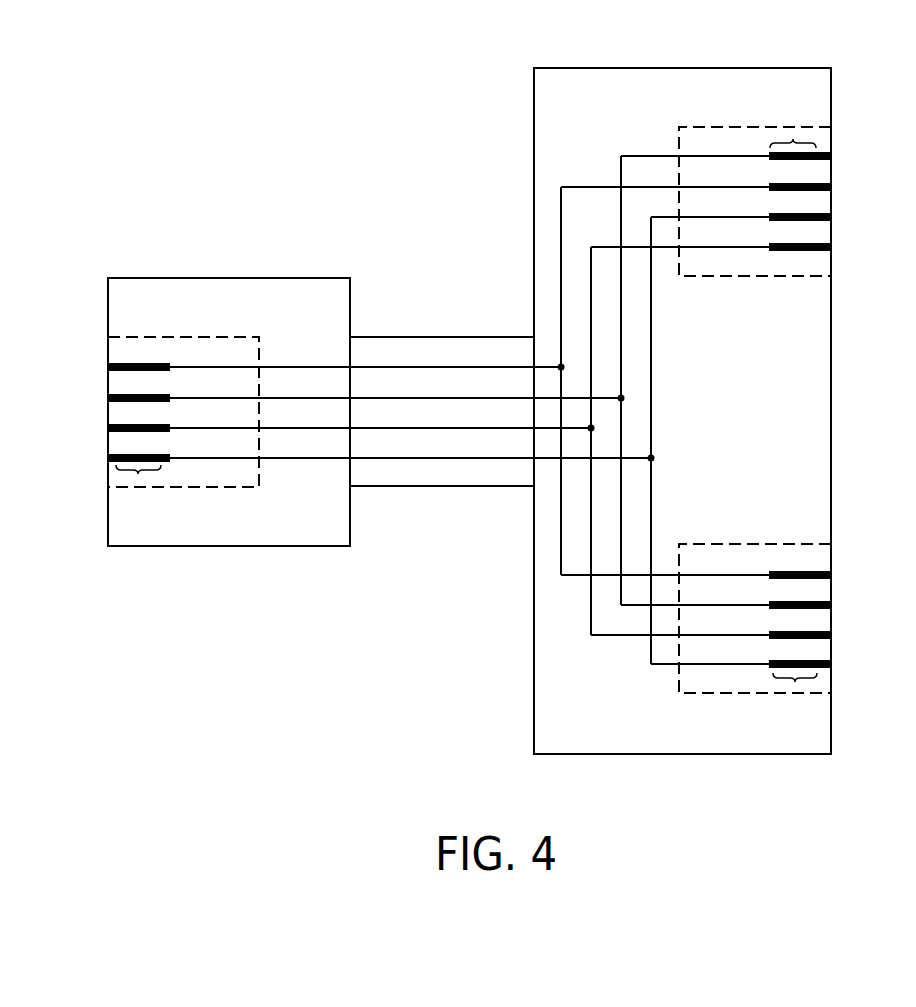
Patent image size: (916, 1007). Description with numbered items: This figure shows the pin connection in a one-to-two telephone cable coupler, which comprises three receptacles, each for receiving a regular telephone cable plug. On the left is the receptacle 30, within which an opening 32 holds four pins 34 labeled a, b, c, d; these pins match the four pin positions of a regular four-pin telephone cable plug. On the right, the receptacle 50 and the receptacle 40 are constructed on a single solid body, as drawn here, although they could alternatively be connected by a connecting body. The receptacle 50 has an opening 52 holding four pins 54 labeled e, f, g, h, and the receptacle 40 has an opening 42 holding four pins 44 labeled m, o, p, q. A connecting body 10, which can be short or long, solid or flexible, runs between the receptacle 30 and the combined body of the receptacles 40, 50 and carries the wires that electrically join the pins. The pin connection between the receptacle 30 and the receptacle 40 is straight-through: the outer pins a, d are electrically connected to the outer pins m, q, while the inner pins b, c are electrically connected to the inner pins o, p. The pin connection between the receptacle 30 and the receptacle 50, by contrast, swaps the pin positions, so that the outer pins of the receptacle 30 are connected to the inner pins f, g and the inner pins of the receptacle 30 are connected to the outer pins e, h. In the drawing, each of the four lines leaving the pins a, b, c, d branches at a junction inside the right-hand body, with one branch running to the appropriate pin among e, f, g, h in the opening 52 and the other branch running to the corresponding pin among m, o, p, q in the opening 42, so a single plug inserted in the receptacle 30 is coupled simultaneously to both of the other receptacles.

The connecting body 10 is at (444, 474).
The receptacle 30 is at (229, 293).
The opening 32 is at (133, 348).
The pins 34 is at (140, 478).
The receptacle 40 is at (737, 745).
The opening 42 is at (803, 557).
The pins 44 is at (797, 685).
The receptacle 50 is at (737, 75).
The opening 52 is at (797, 266).
The pins 54 is at (797, 135).
The outer pin a is at (102, 368).
The inner pin b is at (102, 399).
The inner pin c is at (102, 430).
The outer pin d is at (102, 459).
The outer pin e is at (836, 157).
The inner pin f is at (836, 188).
The inner pin g is at (836, 218).
The outer pin h is at (836, 248).
The outer pin m is at (836, 576).
The inner pin o is at (836, 606).
The inner pin p is at (836, 636).
The outer pin q is at (836, 665).